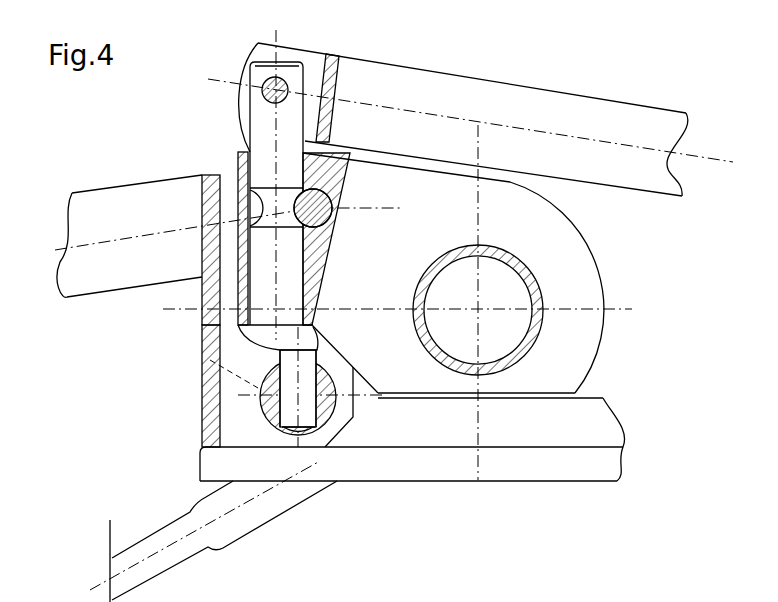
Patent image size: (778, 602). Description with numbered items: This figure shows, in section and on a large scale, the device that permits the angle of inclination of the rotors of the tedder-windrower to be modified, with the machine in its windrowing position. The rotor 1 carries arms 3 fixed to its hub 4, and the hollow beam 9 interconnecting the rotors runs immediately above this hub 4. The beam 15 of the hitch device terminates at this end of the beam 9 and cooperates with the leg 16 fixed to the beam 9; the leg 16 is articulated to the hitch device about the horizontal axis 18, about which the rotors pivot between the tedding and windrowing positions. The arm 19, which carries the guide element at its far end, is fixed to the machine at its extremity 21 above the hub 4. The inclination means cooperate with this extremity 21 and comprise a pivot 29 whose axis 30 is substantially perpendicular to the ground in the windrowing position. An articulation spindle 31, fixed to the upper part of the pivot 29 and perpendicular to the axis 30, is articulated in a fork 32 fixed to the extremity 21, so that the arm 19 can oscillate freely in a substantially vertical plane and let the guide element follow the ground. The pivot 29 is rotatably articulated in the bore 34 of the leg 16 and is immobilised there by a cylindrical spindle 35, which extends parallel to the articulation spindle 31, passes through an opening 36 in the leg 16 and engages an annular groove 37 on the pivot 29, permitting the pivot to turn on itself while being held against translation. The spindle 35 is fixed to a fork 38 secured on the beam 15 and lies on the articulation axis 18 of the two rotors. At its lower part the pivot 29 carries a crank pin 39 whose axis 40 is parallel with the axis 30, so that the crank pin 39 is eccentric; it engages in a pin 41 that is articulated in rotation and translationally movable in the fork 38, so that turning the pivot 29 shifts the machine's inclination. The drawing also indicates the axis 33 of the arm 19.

The rotor 1 is at (510, 483).
The arms 3 is at (172, 537).
The hub 4 is at (345, 468).
The hollow beam 9 is at (529, 335).
The beam 15 is at (85, 205).
The leg 16 is at (604, 318).
The horizontal axis 18 is at (335, 214).
The arm 19 is at (610, 187).
The extremity of the arm 21 is at (377, 75).
The pivot 29 is at (258, 140).
The axis of the pivot 30 is at (309, 318).
The articulation spindle 31 is at (284, 98).
The fork 32 is at (260, 39).
The arm axis 33 is at (604, 138).
The bore 34 is at (204, 318).
The cylindrical spindle 35 is at (344, 180).
The opening 36 is at (323, 240).
The annular groove 37 is at (255, 197).
The fork 38 is at (201, 425).
The crank pin 39 is at (288, 414).
The axis of the crank pin 40 is at (297, 367).
The pin 41 is at (325, 405).